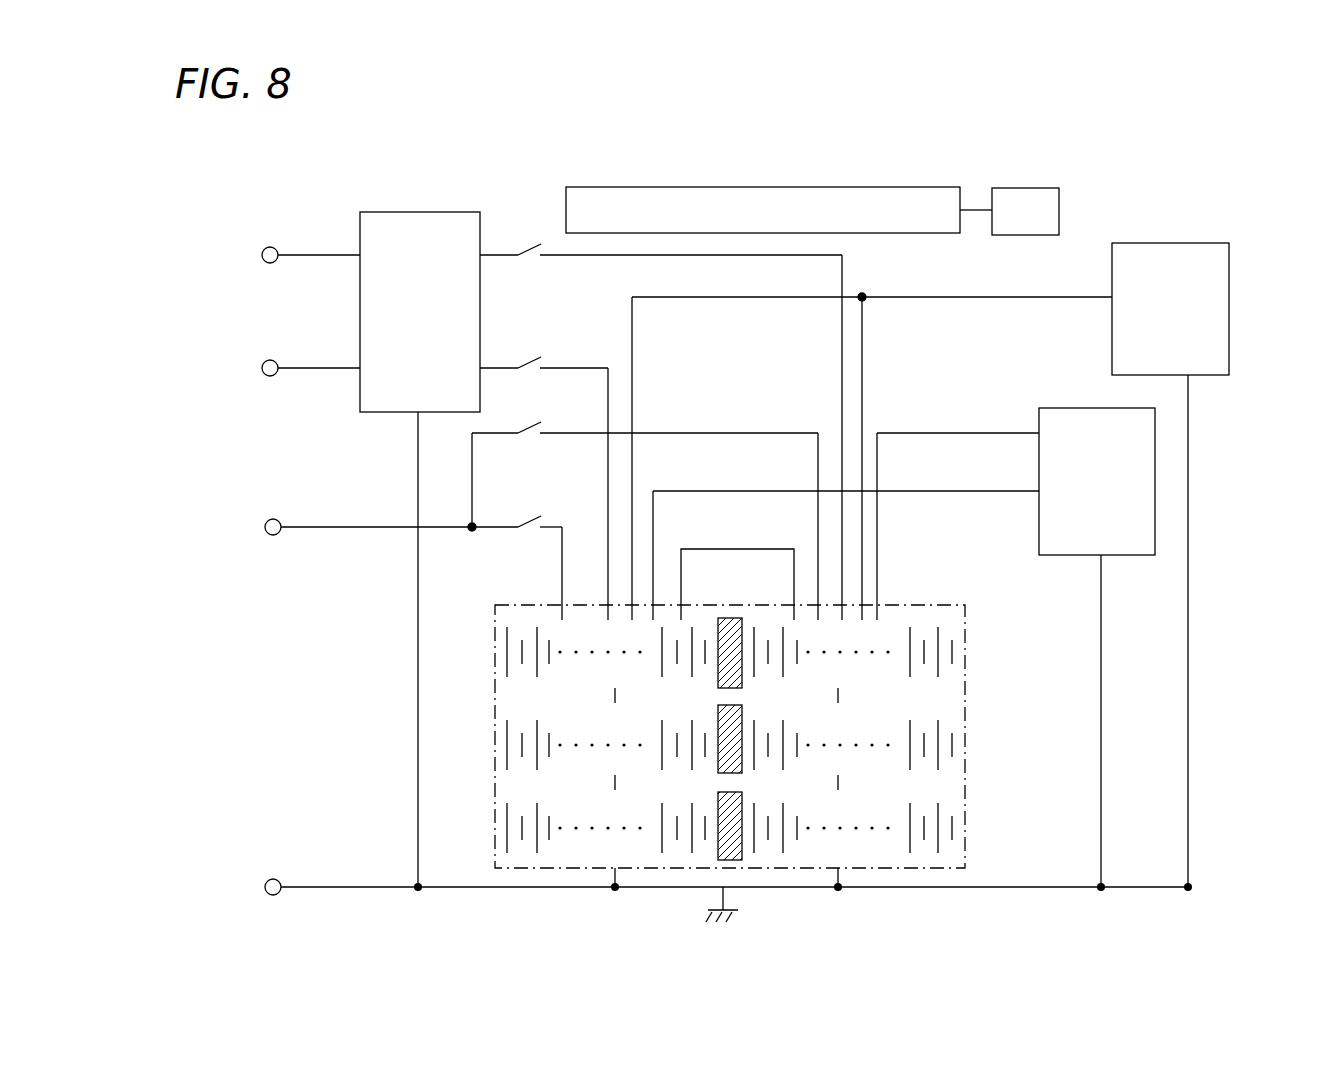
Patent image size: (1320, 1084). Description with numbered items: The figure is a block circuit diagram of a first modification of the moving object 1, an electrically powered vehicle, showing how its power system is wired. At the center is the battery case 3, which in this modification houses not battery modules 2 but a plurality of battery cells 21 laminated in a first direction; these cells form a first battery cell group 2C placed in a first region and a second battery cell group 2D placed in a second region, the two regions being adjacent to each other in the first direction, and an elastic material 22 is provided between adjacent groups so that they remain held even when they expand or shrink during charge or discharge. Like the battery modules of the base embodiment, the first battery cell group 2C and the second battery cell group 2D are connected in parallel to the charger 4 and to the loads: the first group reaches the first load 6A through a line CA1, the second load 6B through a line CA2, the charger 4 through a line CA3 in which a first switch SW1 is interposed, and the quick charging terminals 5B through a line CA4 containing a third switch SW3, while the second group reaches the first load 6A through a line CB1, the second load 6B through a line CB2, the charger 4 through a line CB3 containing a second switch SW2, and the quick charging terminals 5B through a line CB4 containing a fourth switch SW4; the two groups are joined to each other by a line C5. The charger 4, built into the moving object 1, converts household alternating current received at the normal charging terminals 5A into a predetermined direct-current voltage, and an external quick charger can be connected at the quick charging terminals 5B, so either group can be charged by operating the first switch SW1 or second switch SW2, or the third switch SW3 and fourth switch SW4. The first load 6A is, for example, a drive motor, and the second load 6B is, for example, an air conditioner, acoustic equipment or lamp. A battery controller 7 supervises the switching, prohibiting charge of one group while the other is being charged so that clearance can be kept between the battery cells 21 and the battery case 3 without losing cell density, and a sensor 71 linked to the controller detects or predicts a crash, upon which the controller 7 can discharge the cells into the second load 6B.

The moving object 1 is at (1132, 218).
The battery modules 2 is at (945, 607).
The first battery cell group 2C is at (956, 617).
The second battery cell group 2D is at (522, 678).
The battery cells 21 is at (913, 634).
The elastic material 22 is at (740, 690).
The battery case 3 is at (939, 870).
The charger 4 is at (422, 211).
The normal charging terminals 5A is at (264, 362).
The quick charging terminals 5B is at (268, 878).
The first load 6A is at (1076, 407).
The second load 6B is at (1174, 242).
The battery controller 7 is at (764, 186).
The sensor 71 is at (1030, 187).
The first switch SW1 is at (533, 243).
The second switch SW2 is at (535, 356).
The third switch SW3 is at (536, 421).
The fourth switch SW4 is at (537, 515).
The line CA1 is at (955, 432).
The line CA2 is at (866, 352).
The line CA3 is at (848, 278).
The line CA4 is at (771, 432).
The line CB1 is at (948, 490).
The line CB2 is at (634, 352).
The line CB3 is at (552, 364).
The line CB4 is at (560, 573).
The line C5 is at (731, 548).